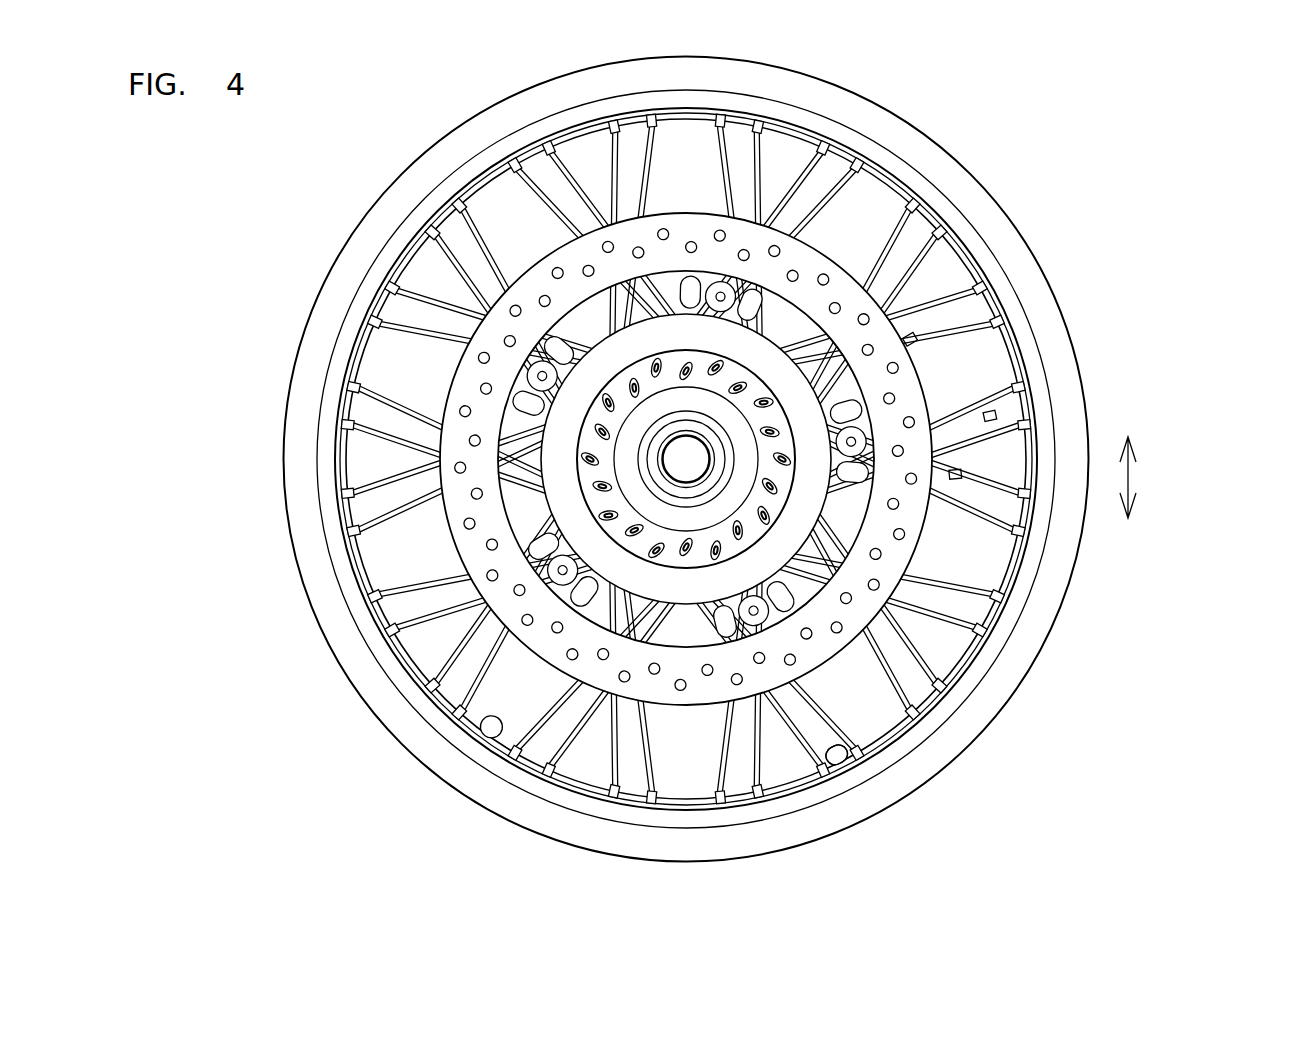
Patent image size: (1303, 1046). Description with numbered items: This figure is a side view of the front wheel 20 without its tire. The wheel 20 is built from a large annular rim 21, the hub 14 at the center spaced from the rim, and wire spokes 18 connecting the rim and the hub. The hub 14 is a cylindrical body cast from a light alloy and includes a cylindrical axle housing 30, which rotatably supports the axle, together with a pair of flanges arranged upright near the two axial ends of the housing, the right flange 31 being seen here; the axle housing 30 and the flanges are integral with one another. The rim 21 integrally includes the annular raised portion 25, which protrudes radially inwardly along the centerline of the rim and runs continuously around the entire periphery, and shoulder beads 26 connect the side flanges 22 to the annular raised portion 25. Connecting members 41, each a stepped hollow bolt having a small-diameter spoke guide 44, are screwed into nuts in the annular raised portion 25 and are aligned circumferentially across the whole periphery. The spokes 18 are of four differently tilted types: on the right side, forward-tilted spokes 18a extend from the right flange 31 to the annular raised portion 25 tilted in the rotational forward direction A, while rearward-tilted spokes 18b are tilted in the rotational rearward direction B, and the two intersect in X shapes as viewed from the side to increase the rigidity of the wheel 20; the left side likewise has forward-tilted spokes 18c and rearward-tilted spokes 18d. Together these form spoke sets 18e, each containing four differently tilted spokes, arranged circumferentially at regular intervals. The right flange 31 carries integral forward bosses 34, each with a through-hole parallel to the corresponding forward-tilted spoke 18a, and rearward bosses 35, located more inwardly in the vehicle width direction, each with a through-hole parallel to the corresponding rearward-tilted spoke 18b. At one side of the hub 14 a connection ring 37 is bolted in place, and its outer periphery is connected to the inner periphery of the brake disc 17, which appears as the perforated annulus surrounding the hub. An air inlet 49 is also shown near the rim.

The hub 14 is at (593, 402).
The brake disc 17 is at (468, 540).
The wire spokes 18 is at (428, 264).
The forward-tilted spokes 18a is at (985, 305).
The rearward-tilted spokes 18b is at (935, 257).
The forward-tilted spokes 18c is at (965, 272).
The rearward-tilted spokes 18d is at (928, 252).
The spoke sets 18e is at (1230, 152).
The wheel 20 is at (305, 88).
The rim 21 is at (383, 162).
The side flanges 22 is at (975, 728).
The annular raised portion 25 is at (973, 667).
The shoulder beads 26 is at (990, 655).
The axle housing 30 is at (660, 453).
The right flange 31 is at (625, 477).
The forward bosses 34 is at (762, 403).
The rearward bosses 35 is at (757, 386).
The connection ring 37 is at (567, 503).
The connecting members 41 is at (848, 756).
The spoke guide 44 is at (916, 790).
The air inlet 49 is at (498, 722).